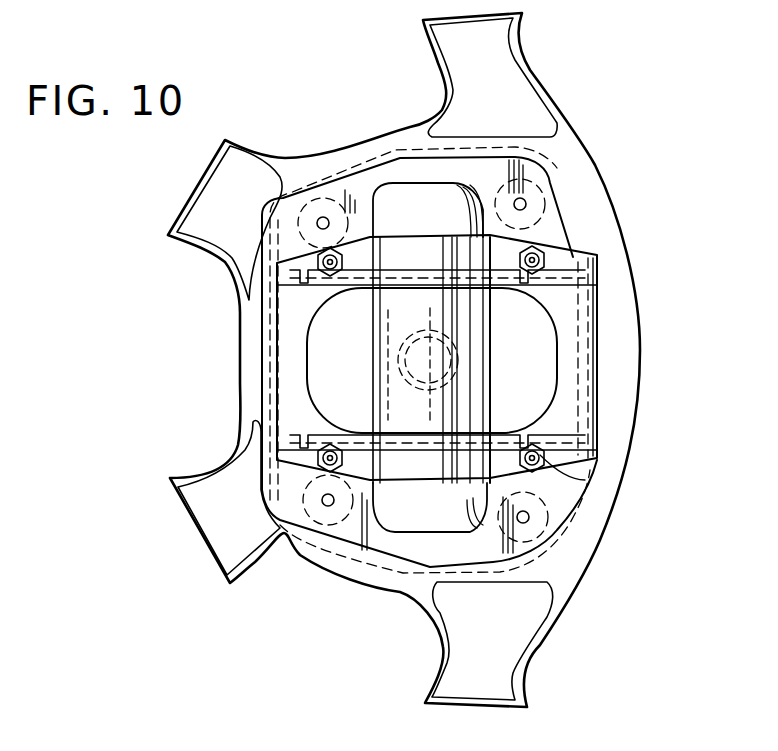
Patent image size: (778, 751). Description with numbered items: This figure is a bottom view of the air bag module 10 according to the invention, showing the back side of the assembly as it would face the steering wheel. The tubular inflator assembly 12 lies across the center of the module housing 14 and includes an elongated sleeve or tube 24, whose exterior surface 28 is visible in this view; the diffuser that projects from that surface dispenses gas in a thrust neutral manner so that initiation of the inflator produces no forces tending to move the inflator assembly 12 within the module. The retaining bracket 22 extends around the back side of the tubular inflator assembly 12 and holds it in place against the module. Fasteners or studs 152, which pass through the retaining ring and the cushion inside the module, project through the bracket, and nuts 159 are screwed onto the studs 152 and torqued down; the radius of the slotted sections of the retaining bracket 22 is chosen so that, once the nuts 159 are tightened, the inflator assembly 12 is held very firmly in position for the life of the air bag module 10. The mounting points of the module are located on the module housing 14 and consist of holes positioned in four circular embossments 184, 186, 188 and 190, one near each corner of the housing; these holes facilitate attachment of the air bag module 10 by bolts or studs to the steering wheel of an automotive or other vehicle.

The air bag module 10 is at (662, 224).
The tubular inflator assembly 12 is at (400, 208).
The module housing 14 is at (548, 242).
The retaining bracket 22 is at (278, 272).
The sleeve 24 is at (373, 330).
The exterior surface 28 is at (460, 322).
The fasteners or studs 152 is at (547, 445).
The nuts 159 is at (560, 493).
The circular embossment 184 is at (312, 200).
The circular embossment 186 is at (340, 522).
The circular embossment 188 is at (543, 170).
The circular embossment 190 is at (580, 500).